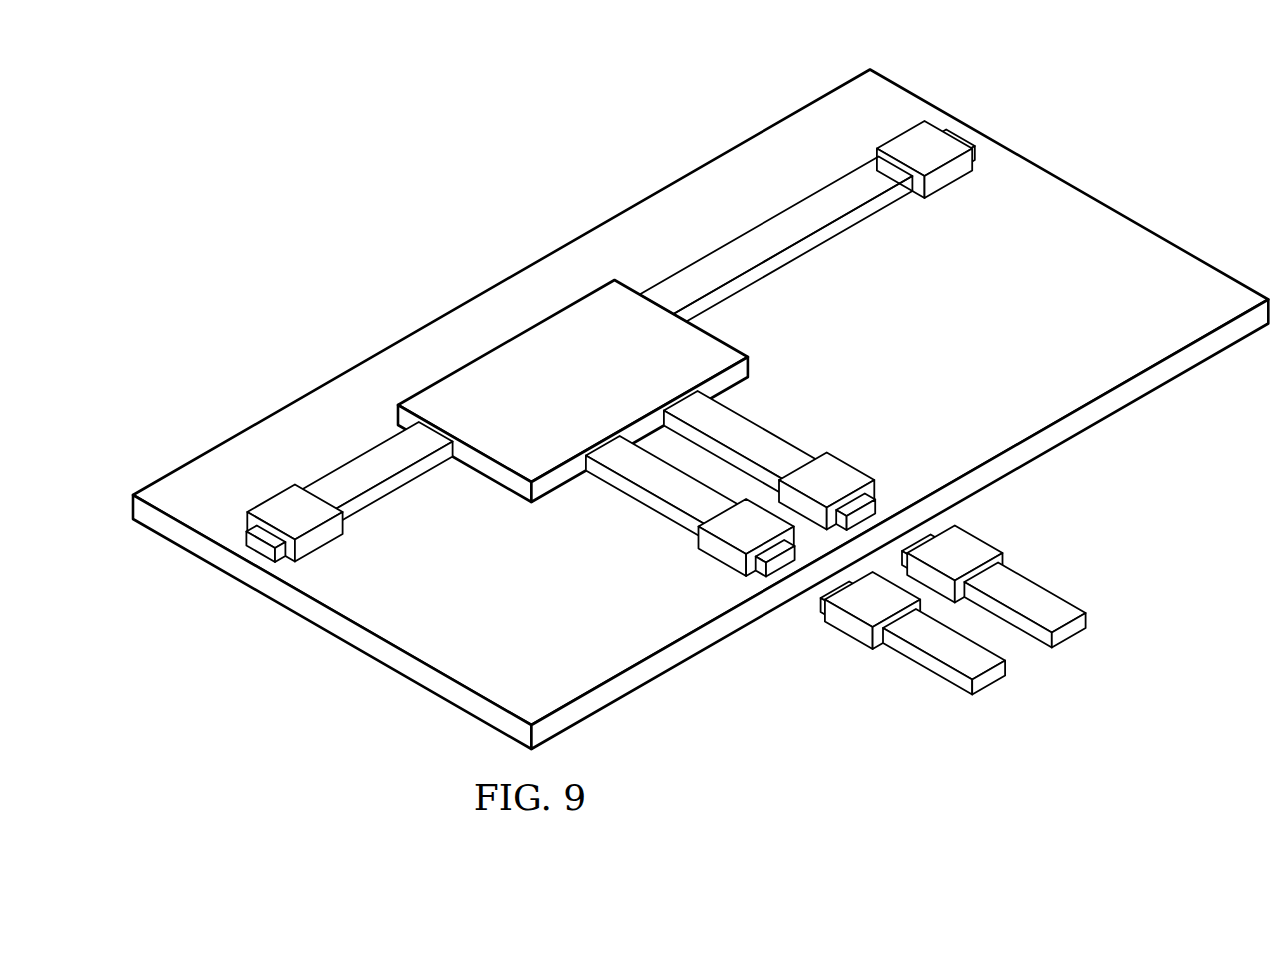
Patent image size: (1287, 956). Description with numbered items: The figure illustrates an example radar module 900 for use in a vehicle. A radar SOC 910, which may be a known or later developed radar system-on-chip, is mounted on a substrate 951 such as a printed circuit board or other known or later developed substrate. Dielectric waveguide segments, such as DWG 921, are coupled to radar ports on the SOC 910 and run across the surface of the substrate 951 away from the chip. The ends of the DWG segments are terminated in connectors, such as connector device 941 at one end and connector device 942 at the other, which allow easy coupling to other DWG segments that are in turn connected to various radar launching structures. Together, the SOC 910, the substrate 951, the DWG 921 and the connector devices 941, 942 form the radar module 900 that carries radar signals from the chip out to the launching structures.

The radar module 900 is at (1070, 113).
The substrate 951 is at (521, 270).
The radar SOC 910 is at (503, 477).
The DWG segment 921 is at (378, 460).
The connector device 941 is at (290, 492).
The connector device 942 is at (947, 175).